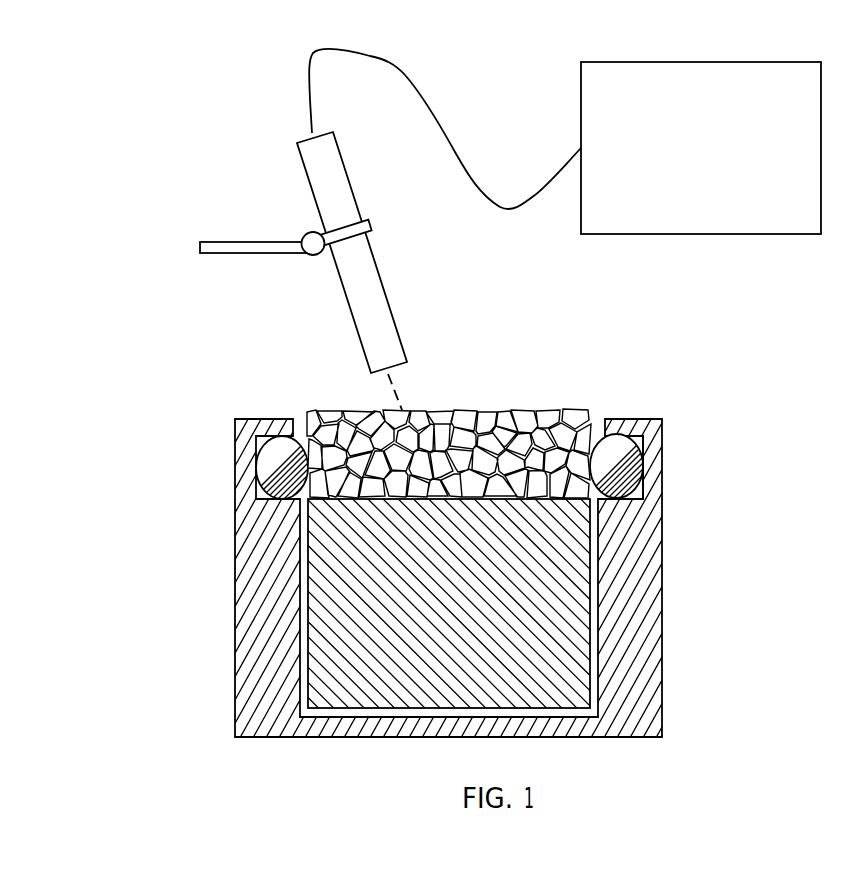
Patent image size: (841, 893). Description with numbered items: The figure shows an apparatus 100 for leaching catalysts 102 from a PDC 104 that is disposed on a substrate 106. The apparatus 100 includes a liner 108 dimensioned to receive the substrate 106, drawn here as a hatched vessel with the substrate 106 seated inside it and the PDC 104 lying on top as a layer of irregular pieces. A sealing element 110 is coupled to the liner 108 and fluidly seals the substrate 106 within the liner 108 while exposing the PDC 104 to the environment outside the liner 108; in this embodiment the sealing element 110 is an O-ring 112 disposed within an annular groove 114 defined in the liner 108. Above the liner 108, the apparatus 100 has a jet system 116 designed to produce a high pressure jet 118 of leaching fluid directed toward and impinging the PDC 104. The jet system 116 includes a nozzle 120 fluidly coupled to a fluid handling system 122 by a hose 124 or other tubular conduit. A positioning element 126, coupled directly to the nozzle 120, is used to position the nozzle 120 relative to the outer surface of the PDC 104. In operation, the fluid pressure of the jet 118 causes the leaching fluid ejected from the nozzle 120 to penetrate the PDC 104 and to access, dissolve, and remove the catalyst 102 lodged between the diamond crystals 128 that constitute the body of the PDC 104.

The apparatus 100 is at (134, 96).
The catalysts 102 is at (370, 413).
The PDC 104 is at (424, 454).
The substrate 106 is at (429, 625).
The liner 108 is at (243, 420).
The sealing element 110 is at (268, 518).
The O-ring 112 is at (637, 458).
The annular groove 114 is at (647, 490).
The jet system 116 is at (466, 58).
The high pressure jet 118 is at (402, 395).
The nozzle 120 is at (388, 300).
The fluid handling system 122 is at (689, 153).
The hose 124 is at (502, 209).
The positioning element 126 is at (250, 254).
The diamond crystals 128 is at (503, 410).